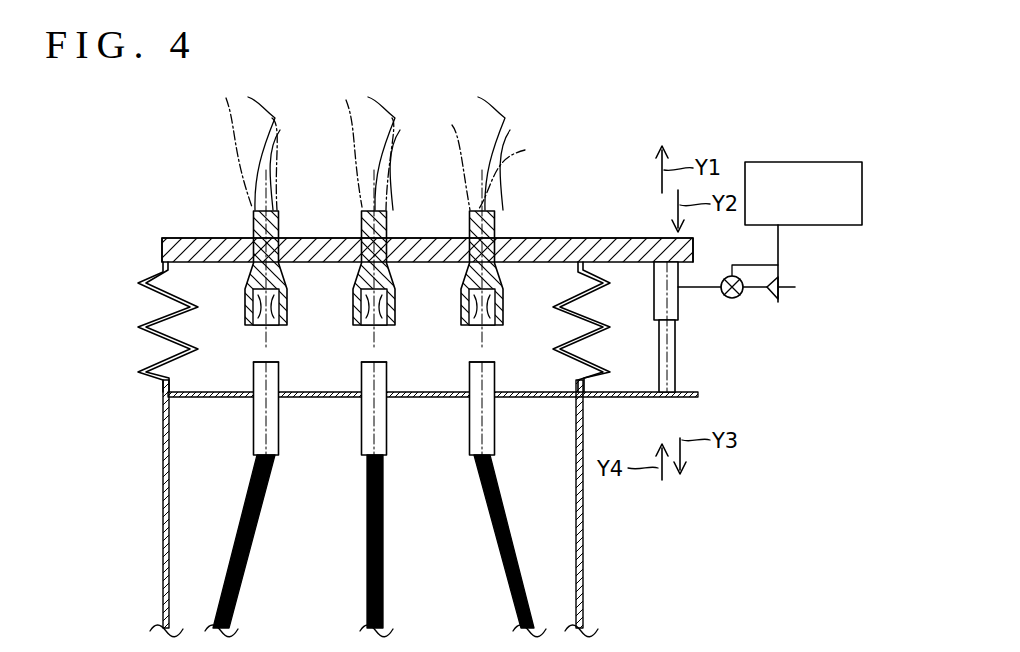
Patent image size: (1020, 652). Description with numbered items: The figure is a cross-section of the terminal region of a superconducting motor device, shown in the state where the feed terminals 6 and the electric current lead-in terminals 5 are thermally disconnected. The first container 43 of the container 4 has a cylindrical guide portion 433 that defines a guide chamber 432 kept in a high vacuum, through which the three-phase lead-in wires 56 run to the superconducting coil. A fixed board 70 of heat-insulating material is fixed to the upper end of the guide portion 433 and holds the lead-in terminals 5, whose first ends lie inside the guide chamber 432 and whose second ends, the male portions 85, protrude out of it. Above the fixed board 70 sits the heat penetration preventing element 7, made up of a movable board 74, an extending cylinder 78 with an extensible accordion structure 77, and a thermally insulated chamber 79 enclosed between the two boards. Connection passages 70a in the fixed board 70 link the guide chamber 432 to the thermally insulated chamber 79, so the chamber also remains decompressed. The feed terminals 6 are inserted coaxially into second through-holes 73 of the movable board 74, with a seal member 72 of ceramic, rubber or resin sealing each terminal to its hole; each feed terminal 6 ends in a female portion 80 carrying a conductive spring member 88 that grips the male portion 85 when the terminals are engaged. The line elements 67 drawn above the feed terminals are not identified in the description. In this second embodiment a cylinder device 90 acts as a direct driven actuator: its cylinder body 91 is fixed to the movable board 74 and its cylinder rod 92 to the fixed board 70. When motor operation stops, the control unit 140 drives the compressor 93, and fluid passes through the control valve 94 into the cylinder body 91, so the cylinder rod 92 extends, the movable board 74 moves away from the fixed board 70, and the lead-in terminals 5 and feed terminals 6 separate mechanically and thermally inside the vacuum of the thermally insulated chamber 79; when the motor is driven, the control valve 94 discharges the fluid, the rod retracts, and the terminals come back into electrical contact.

The container 4 is at (585, 570).
The electric current lead-in terminals 5 is at (253, 425).
The feed terminals 6 is at (252, 213).
The heat penetration preventing element 7 is at (320, 307).
The first container 43 is at (585, 604).
The electric current lead-in wires 56 is at (262, 522).
The optical axis 67 is at (385, 142).
The fixed board 70 is at (172, 403).
The connection passages 70a is at (440, 398).
The seal member 72 is at (280, 230).
The second through-holes 73 is at (518, 246).
The movable board 74 is at (170, 240).
The accordion structure 77 is at (339, 327).
The extending cylinder 78 is at (143, 280).
The thermally insulated chamber 79 is at (330, 255).
The female portion 80 is at (270, 325).
The male portion 85 is at (279, 372).
The spring member 88 is at (282, 294).
The cylinder device 90 is at (676, 336).
The cylinder body 91 is at (680, 318).
The cylinder rod 92 is at (676, 372).
The compressor 93 is at (782, 280).
The control valve 94 is at (735, 299).
The control unit 140 is at (822, 162).
The guide chamber 432 is at (163, 462).
The guide portion 433 is at (163, 520).